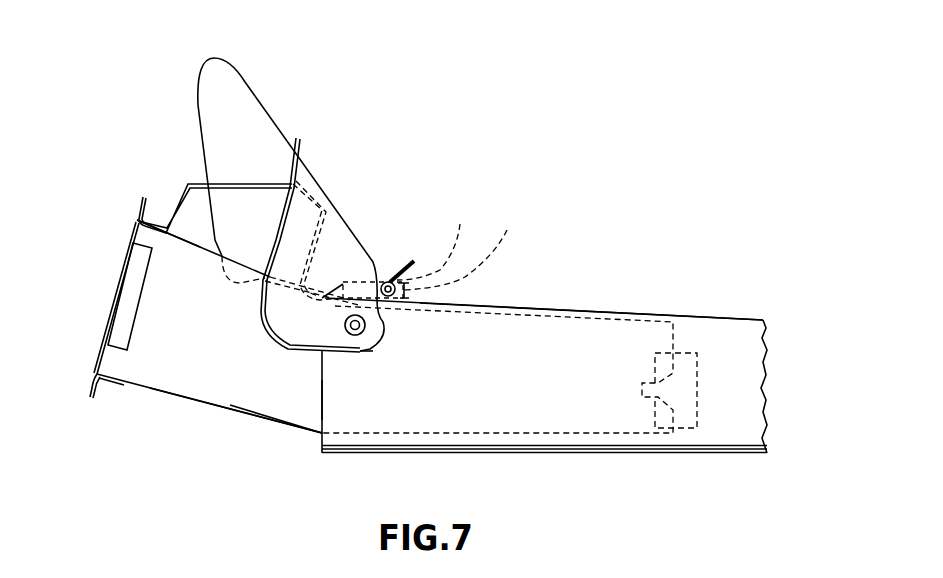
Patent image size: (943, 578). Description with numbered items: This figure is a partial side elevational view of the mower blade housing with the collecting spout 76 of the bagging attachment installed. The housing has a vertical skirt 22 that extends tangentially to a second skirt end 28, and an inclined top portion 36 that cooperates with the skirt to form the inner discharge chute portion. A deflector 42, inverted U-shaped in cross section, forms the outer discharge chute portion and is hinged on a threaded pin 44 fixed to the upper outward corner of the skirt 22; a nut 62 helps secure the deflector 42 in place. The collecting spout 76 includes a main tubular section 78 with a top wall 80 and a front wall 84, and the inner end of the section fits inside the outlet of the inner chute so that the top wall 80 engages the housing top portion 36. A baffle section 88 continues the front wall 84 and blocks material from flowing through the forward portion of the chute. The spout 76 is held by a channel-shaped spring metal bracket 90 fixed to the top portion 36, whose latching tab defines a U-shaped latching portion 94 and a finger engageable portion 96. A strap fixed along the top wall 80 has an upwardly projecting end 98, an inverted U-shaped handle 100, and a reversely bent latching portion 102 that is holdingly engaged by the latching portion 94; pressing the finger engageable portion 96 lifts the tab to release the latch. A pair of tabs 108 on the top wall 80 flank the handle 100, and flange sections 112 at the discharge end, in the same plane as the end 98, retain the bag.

The vertical skirt 22 is at (546, 389).
The second skirt end 28 is at (322, 383).
The top portion 36 is at (548, 310).
The deflector 42 is at (328, 168).
The pin 44 is at (345, 323).
The nut 62 is at (362, 333).
The collecting spout 76 is at (274, 433).
The main tubular section 78 is at (227, 413).
The top wall 80 is at (194, 244).
The front wall 84 is at (222, 341).
The baffle section 88 is at (597, 432).
The spring metal bracket 90 is at (410, 296).
The latching portion 94 is at (436, 243).
The finger engageable portion 96 is at (393, 270).
The upwardly projecting end 98 is at (138, 213).
The handle 100 is at (199, 184).
The latching portion 102 is at (472, 248).
The tabs 108 is at (329, 285).
The flange sections 112 is at (92, 380).